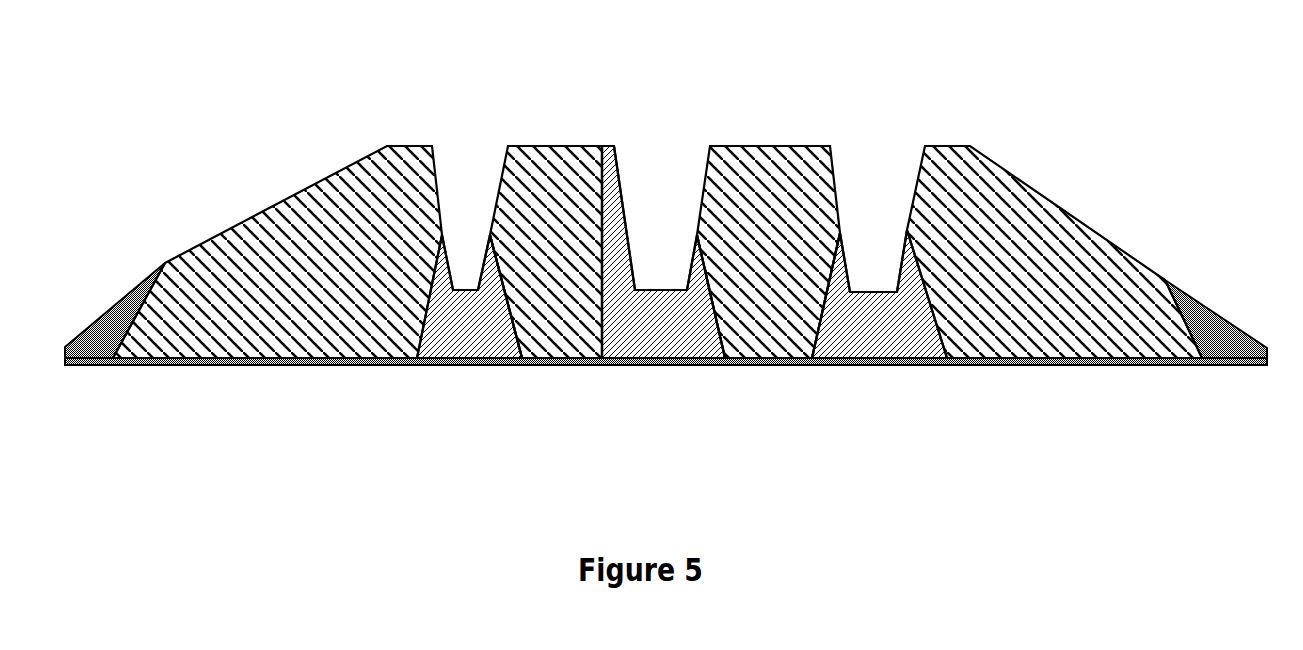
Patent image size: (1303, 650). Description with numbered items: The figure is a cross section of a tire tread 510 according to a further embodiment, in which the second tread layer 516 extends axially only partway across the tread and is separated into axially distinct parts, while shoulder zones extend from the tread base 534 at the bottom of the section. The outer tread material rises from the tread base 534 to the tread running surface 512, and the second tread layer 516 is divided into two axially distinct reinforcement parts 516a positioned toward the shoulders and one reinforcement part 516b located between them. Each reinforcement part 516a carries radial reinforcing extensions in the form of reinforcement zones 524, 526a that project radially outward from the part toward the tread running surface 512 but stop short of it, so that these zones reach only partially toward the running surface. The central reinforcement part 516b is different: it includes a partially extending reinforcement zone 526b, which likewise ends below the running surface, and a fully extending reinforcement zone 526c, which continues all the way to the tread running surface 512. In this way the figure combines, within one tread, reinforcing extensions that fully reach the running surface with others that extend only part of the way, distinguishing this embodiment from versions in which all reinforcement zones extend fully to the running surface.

The tire tread 510 is at (666, 256).
The tread running surface 512 is at (591, 146).
The second tread layer 516 is at (723, 310).
The reinforcement part 516a is at (468, 330).
The reinforcement part 516b is at (642, 330).
The reinforcement zone 524 is at (442, 275).
The reinforcement zone 526a is at (488, 275).
The partially extending reinforcement zone 526b is at (697, 275).
The fully extending reinforcement zone 526c is at (610, 156).
The base layer 534 is at (312, 358).